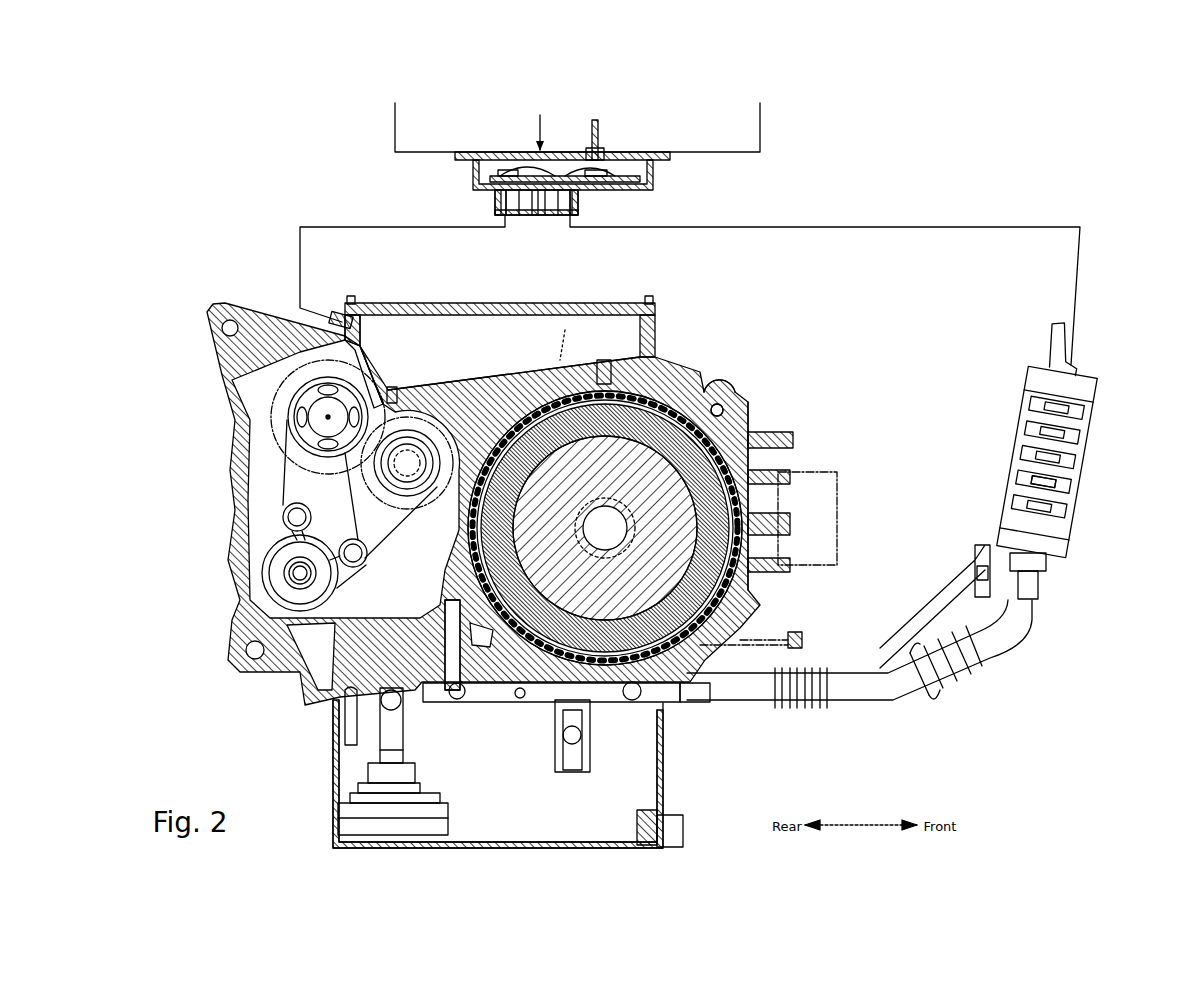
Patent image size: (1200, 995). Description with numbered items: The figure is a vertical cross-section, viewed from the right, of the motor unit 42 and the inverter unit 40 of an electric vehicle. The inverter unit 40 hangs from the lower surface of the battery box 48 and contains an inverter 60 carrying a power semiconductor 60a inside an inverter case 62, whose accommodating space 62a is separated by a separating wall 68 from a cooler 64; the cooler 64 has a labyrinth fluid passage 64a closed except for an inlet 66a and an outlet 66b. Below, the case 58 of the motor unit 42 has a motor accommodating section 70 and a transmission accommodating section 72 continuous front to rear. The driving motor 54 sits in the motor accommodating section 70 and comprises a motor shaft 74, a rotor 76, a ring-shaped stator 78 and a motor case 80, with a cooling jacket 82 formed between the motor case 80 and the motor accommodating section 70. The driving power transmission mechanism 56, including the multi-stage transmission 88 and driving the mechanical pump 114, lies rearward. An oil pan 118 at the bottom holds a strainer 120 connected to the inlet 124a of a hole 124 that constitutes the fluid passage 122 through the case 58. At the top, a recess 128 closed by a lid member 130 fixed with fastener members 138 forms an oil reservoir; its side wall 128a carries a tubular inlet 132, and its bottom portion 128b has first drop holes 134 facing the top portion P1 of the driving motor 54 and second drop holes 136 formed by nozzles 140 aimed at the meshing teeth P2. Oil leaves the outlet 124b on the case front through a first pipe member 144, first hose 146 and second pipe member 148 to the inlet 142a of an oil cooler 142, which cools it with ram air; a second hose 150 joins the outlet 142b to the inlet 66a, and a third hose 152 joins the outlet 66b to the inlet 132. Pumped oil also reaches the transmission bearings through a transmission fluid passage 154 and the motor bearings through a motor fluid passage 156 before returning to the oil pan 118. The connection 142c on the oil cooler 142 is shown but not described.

The inverter unit 40 is at (655, 182).
The motor unit 42 is at (225, 622).
The battery box 48 is at (760, 143).
The driving motor 54 is at (745, 430).
The driving power transmission mechanism 56 is at (270, 502).
The case 58 is at (762, 392).
The inverter 60 is at (520, 172).
The power semiconductor 60a is at (505, 170).
The inverter case 62 is at (473, 172).
The accommodating space 62a is at (536, 106).
The cooler 64 is at (582, 212).
The fluid passage 64a is at (541, 218).
The inlet 66a is at (565, 216).
The outlet 66b is at (512, 216).
The separating wall 68 is at (590, 176).
The motor accommodating section 70 is at (722, 385).
The transmission accommodating section 72 is at (296, 390).
The motor shaft 74 is at (612, 395).
The rotor 76 is at (700, 612).
The stator 78 is at (680, 578).
The motor case 80 is at (740, 530).
The cooling jacket 82 is at (772, 475).
The transmission 88 is at (318, 370).
The mechanical pump 114 is at (280, 478).
The oil pan 118 is at (665, 770).
The strainer 120 is at (448, 820).
The fluid passage 122 is at (400, 752).
The hole 124 is at (520, 702).
The inlet 124a is at (380, 748).
The outlet 124b is at (695, 705).
The recess 128 is at (437, 298).
The side wall 128a is at (365, 315).
The bottom portion 128b is at (505, 365).
The lid member 130 is at (555, 316).
The inlet 132 is at (336, 312).
The first drop hole 134 is at (602, 360).
The second drop hole 136 is at (394, 385).
The fastener member 138 is at (352, 296).
The nozzle 140 is at (430, 405).
The oil cooler 142 is at (1100, 478).
The inlet 142a is at (1046, 570).
The outlet 142b is at (1080, 365).
The filter element 142c is at (1062, 515).
The first pipe member 144 is at (720, 710).
The first hose 146 is at (880, 702).
The second pipe member 148 is at (1000, 655).
The second hose 150 is at (965, 226).
The third hose 152 is at (345, 226).
The transmission fluid passage 154 is at (445, 606).
The motor fluid passage 156 is at (760, 630).
The top portion P1 is at (620, 680).
The teeth P2 is at (385, 417).